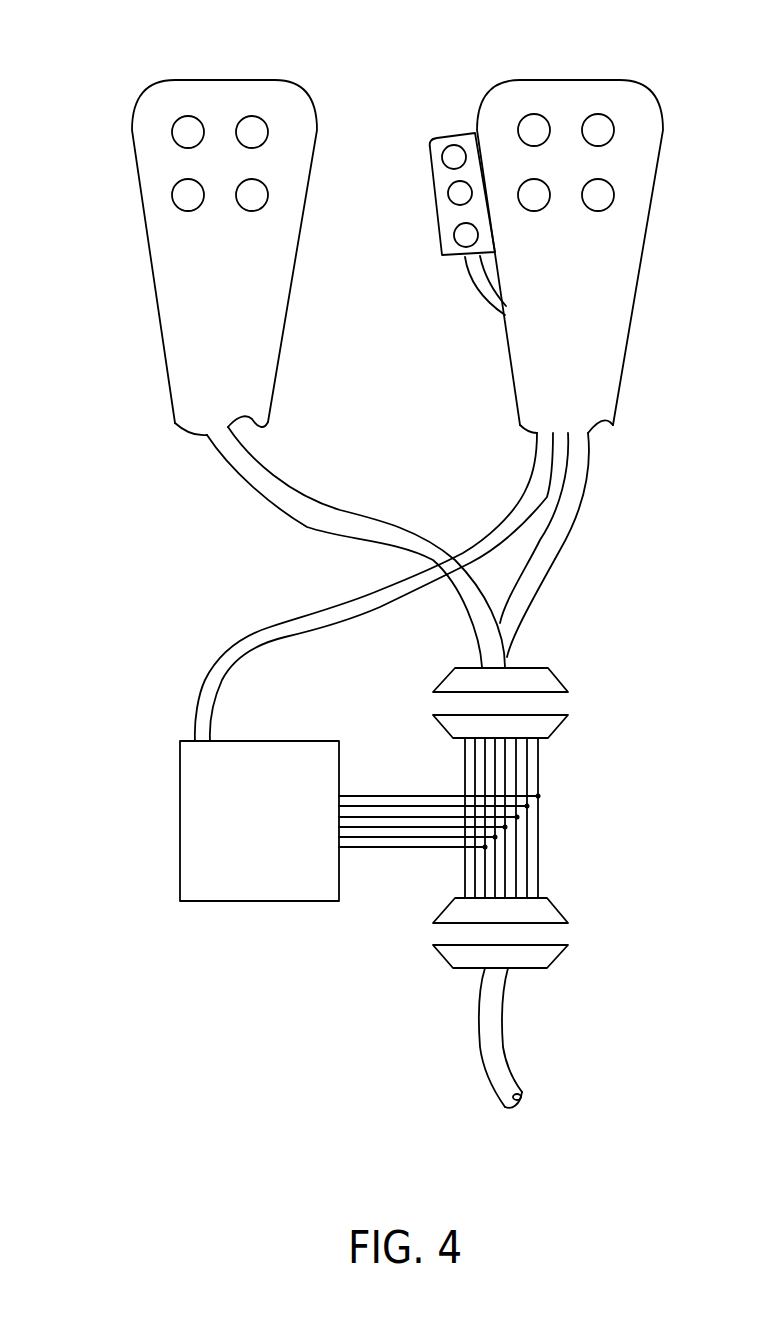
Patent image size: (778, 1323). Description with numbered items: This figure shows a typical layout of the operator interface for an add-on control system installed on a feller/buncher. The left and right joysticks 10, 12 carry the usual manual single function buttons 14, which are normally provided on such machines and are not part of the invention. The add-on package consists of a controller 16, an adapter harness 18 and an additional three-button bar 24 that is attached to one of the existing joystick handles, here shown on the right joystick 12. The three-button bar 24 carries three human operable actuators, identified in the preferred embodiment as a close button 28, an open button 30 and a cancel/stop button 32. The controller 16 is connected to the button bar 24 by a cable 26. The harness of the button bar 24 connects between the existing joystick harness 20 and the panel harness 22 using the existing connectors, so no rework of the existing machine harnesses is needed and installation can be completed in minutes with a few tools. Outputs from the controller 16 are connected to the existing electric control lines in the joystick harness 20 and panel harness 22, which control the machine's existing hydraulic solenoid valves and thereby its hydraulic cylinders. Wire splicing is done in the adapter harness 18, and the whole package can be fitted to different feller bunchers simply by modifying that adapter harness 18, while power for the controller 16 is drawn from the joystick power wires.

The left joystick 10 is at (153, 167).
The right joystick 12 is at (647, 234).
The manual single function buttons 14 is at (263, 179).
The controller 16 is at (180, 822).
The adapter harness 18 is at (563, 821).
The joystick harness 20 is at (382, 510).
The panel harness 22 is at (480, 1038).
The three-button bar 24 is at (454, 132).
The cable 26 is at (268, 625).
The close button 28 is at (444, 160).
The open button 30 is at (450, 198).
The cancel/stop button 32 is at (456, 244).